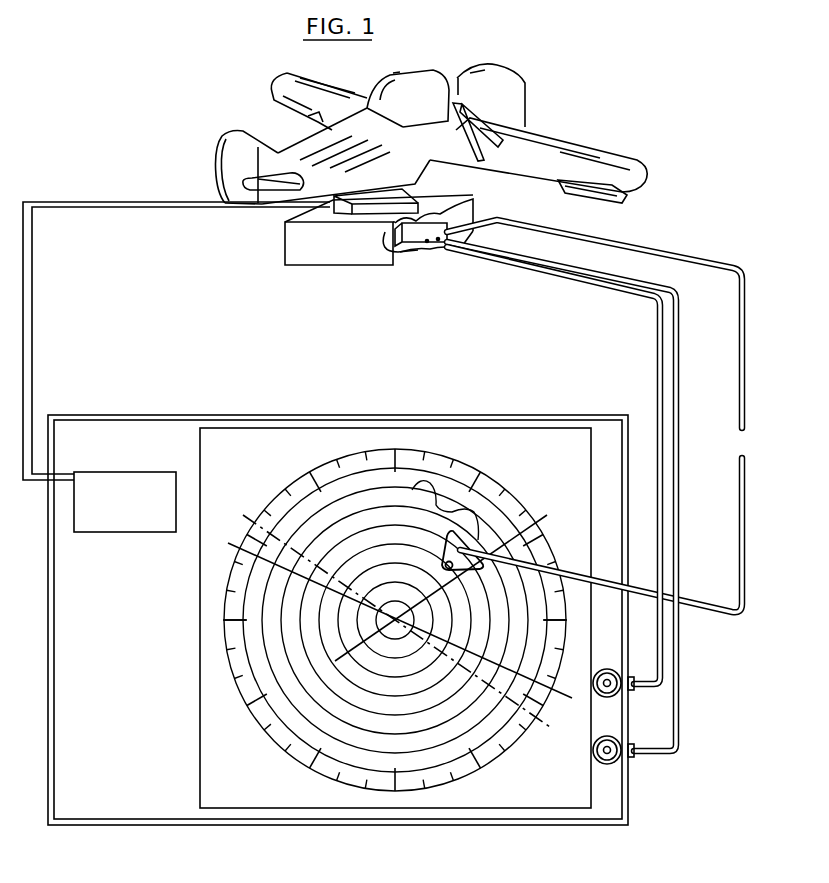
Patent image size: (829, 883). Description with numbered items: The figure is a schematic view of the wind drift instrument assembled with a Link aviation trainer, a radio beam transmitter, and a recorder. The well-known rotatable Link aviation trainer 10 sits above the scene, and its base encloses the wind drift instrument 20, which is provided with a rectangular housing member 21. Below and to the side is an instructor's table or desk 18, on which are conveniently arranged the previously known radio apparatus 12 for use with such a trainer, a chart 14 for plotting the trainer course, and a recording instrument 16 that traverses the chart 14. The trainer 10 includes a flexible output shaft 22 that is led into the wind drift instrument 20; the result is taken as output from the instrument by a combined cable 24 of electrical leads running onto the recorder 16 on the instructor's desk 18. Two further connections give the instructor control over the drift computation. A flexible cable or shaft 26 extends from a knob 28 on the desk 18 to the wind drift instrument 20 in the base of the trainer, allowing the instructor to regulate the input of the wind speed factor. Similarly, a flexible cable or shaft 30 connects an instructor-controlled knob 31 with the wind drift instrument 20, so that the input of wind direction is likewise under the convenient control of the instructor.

The Link aviation trainer 10 is at (524, 84).
The radio apparatus 12 is at (88, 524).
The chart 14 is at (278, 794).
The recording instrument 16 is at (464, 546).
The instructor's table or desk 18 is at (141, 826).
The wind drift instrument 20 is at (454, 221).
The rectangular housing member 21 is at (428, 244).
The flexible output shaft 22 is at (388, 254).
The combined cable of electrical leads 24 is at (690, 262).
The flexible cable or shaft 26 is at (659, 404).
The knob 28 is at (607, 669).
The flexible cable or shaft 30 is at (676, 352).
The instructor-controlled knob 31 is at (606, 736).